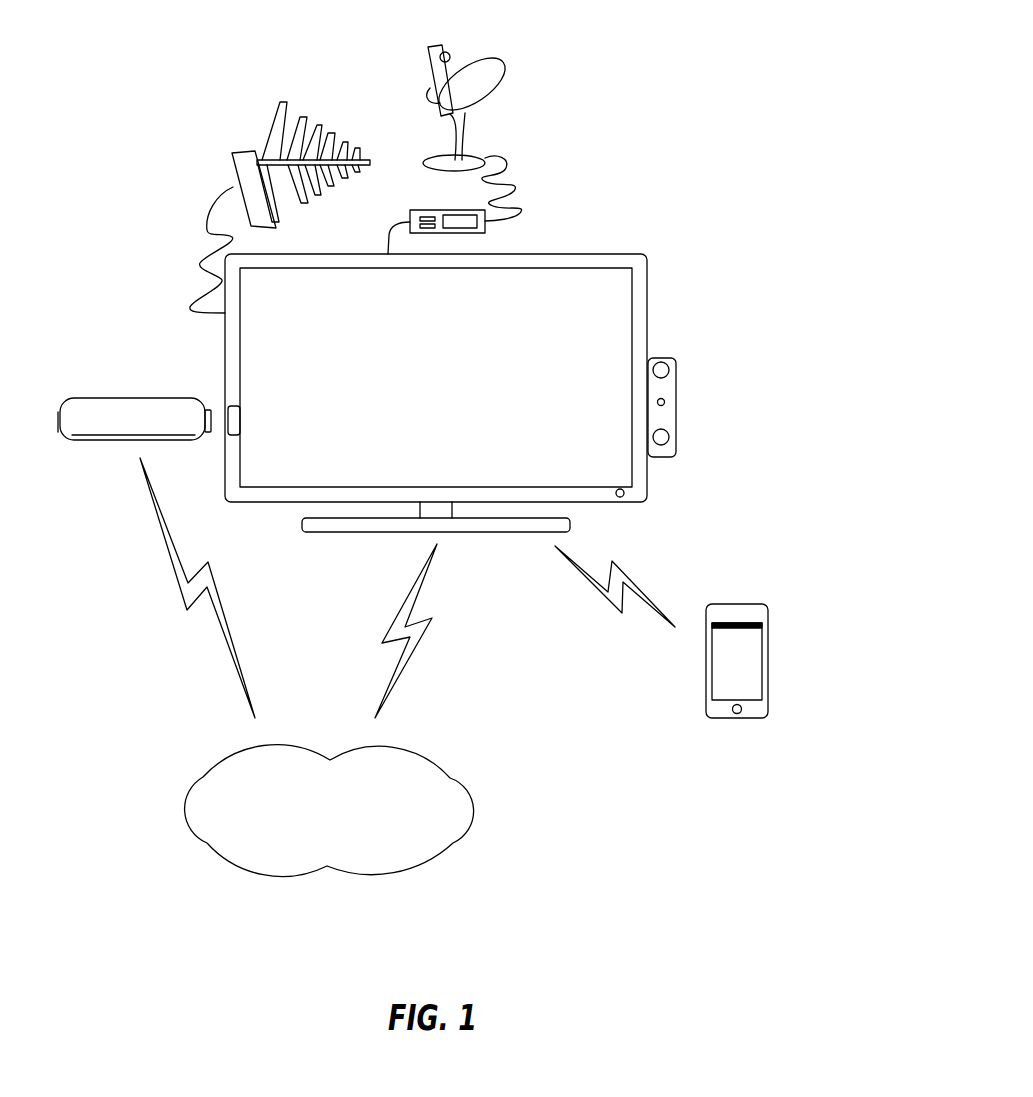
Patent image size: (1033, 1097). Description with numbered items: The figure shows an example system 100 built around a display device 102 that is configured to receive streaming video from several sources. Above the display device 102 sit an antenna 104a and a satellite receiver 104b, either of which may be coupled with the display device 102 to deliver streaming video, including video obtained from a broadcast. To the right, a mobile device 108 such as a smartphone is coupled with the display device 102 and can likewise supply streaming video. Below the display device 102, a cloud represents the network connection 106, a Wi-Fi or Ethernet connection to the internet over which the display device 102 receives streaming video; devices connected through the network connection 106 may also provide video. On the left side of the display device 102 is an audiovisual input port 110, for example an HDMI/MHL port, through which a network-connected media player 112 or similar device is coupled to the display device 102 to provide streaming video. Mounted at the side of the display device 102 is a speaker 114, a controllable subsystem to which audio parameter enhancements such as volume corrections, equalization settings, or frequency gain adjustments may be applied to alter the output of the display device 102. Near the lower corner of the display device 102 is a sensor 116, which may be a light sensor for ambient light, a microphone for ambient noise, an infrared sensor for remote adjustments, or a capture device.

The system 100 is at (586, 21).
The display device 102 is at (578, 253).
The antenna 104a is at (302, 122).
The satellite receiver 104b is at (457, 209).
The network connection 106 is at (401, 745).
The mobile device 108 is at (724, 603).
The audiovisual input port 110 is at (230, 406).
The network-connected media player 112 is at (118, 398).
The speaker 114 is at (676, 358).
The sensor 116 is at (624, 497).